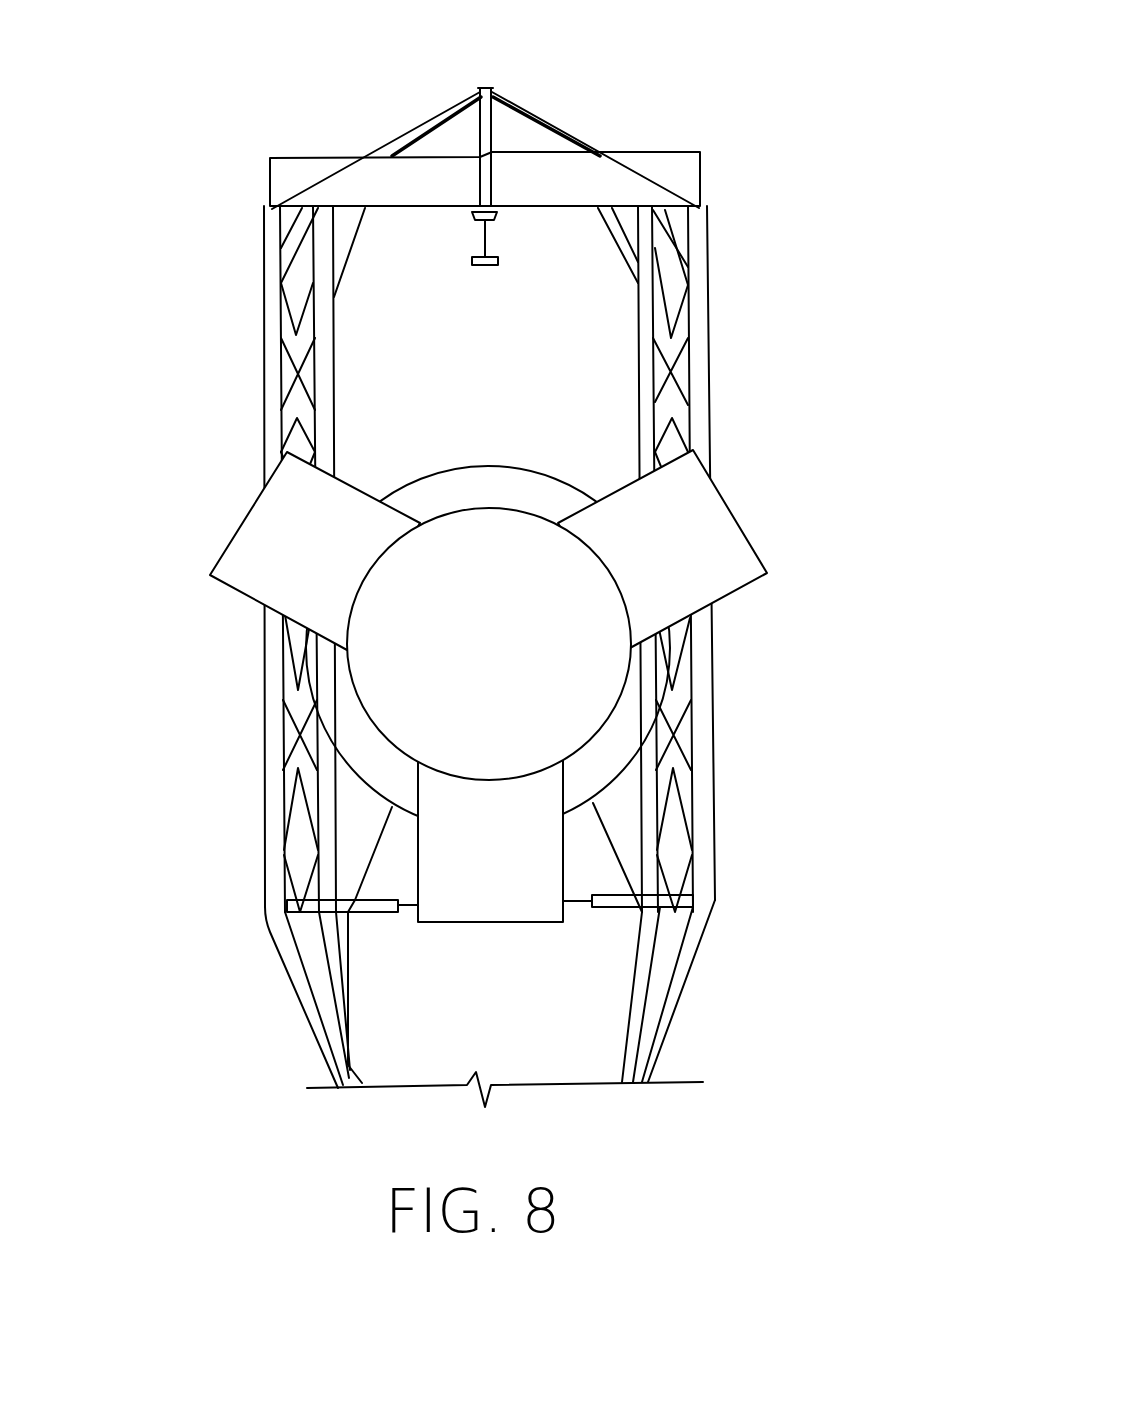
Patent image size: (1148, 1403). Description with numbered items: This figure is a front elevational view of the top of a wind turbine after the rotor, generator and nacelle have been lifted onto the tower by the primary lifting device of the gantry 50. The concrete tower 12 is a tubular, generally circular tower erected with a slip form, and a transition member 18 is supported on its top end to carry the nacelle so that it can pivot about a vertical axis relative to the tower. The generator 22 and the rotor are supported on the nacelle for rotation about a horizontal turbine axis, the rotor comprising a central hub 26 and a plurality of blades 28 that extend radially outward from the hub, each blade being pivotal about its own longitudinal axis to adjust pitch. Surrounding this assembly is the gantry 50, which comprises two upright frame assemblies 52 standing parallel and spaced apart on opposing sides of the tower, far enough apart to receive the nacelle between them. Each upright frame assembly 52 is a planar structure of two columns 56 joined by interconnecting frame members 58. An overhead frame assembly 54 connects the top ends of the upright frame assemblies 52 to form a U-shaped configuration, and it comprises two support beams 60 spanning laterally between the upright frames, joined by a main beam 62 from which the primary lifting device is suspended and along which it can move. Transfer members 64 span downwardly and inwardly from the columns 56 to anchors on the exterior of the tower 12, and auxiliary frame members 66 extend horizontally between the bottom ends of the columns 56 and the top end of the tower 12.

The tower 12 is at (395, 1043).
The transition member 18 is at (587, 865).
The generator 22 is at (472, 476).
The central hub 26 is at (583, 700).
The blades 28 is at (728, 545).
The gantry 50 is at (155, 401).
The upright frame assemblies 52 is at (272, 138).
The overhead frame assembly 54 is at (528, 82).
The columns 56 is at (710, 333).
The interconnecting frame members 58 is at (298, 722).
The support beams 60 is at (700, 170).
The main beam 62 is at (490, 240).
The transfer members 64 is at (308, 988).
The auxiliary frame members 66 is at (298, 915).